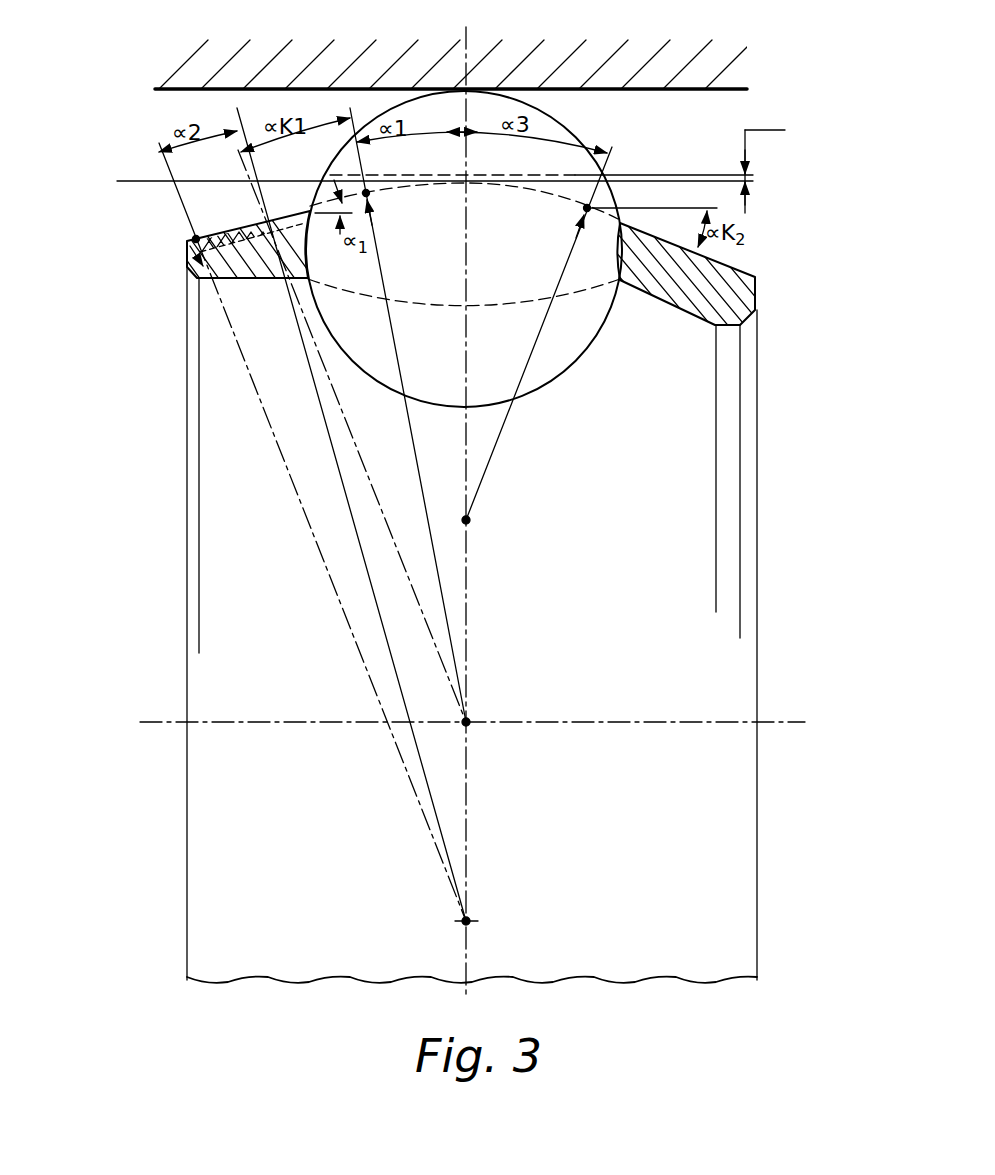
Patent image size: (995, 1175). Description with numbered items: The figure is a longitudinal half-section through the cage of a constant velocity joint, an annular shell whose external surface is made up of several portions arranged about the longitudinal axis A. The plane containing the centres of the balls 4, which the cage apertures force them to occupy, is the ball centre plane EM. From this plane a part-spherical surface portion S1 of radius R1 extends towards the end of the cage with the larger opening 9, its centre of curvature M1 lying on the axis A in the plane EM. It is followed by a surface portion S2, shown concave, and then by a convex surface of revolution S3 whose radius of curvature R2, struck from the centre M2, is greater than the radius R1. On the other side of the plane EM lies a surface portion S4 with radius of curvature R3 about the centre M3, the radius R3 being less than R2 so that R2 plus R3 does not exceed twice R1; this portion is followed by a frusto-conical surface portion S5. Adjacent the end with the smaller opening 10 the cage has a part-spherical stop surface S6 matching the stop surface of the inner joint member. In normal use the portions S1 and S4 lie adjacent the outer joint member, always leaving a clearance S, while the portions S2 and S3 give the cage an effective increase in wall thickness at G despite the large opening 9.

The balls 4 is at (577, 367).
The larger opening 9 is at (187, 546).
The smaller opening 10 is at (757, 551).
The part-spherical surface portion S1 is at (428, 185).
The surface portion S2 is at (322, 195).
The convex surface of revolution S3 is at (219, 230).
The surface portion S4 is at (545, 193).
The frusto-conical surface portion S5 is at (733, 262).
The part-spherical stop surface S6 is at (697, 318).
The effective increase in wall thickness G is at (190, 246).
The ball centre plane EM is at (475, 64).
The longitudinal axis A is at (485, 512).
The clearance S is at (451, 156).
The centre of curvature M1 is at (486, 735).
The centre of curvature M2 is at (485, 927).
The centre of curvature M3 is at (487, 521).
The radius of curvature R1 is at (408, 415).
The radius of curvature R2 is at (312, 532).
The radius of curvature R3 is at (539, 333).